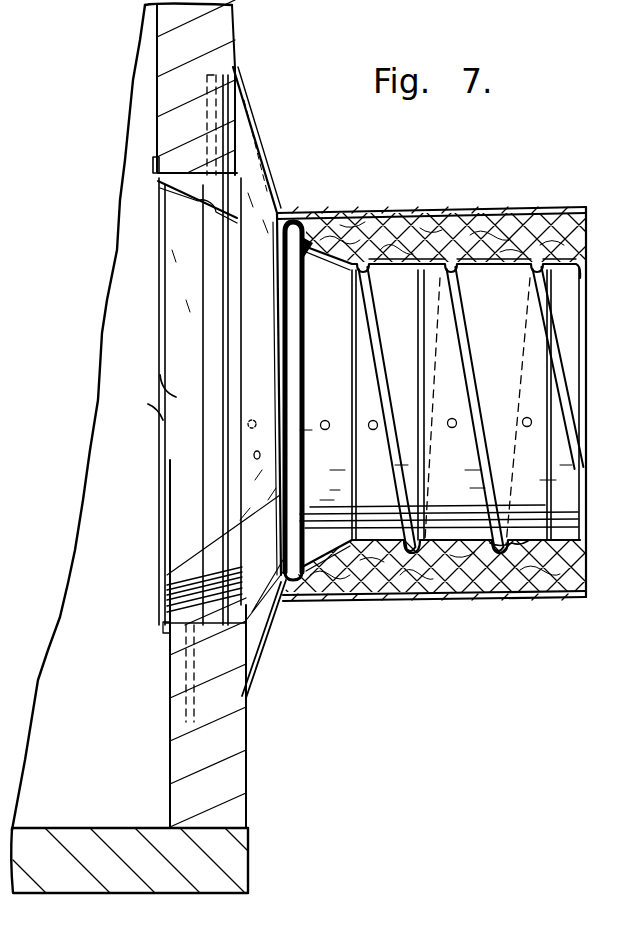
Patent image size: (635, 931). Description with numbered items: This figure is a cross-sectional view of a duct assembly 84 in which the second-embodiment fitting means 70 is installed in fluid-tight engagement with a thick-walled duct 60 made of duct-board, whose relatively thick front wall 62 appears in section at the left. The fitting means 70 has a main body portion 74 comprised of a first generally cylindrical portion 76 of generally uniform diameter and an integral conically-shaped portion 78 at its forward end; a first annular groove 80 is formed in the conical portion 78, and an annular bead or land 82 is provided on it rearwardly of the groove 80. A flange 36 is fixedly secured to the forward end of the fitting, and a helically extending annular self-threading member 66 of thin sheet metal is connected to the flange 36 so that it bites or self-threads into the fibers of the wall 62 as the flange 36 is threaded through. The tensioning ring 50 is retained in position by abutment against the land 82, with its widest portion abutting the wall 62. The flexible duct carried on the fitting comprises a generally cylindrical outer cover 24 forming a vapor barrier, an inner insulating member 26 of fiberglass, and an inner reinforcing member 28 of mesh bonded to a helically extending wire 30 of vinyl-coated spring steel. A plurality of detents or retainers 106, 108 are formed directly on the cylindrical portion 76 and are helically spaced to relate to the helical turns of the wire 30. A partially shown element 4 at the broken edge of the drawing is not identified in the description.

The body panel 4 is at (73, 417).
The outer cover 24 is at (540, 208).
The insulating member 26 is at (582, 232).
The reinforcing member 28 is at (547, 266).
The helically extending wire 30 is at (566, 388).
The flange 36 is at (153, 165).
The tensioning ring 50 is at (262, 156).
The thick-walled duct 60 is at (279, 867).
The front wall 62 is at (231, 26).
The self-threading member 66 is at (232, 62).
The fitting means 70 is at (548, 512).
The main body portion 74 is at (469, 515).
The first generally cylindrical portion 76 is at (503, 266).
The conically-shaped portion 78 is at (319, 267).
The first annular groove 80 is at (222, 583).
The annular bead or land 82 is at (293, 222).
The duct assembly 84 is at (423, 200).
The detent or retainer 106 is at (458, 263).
The detent or retainer 108 is at (526, 554).